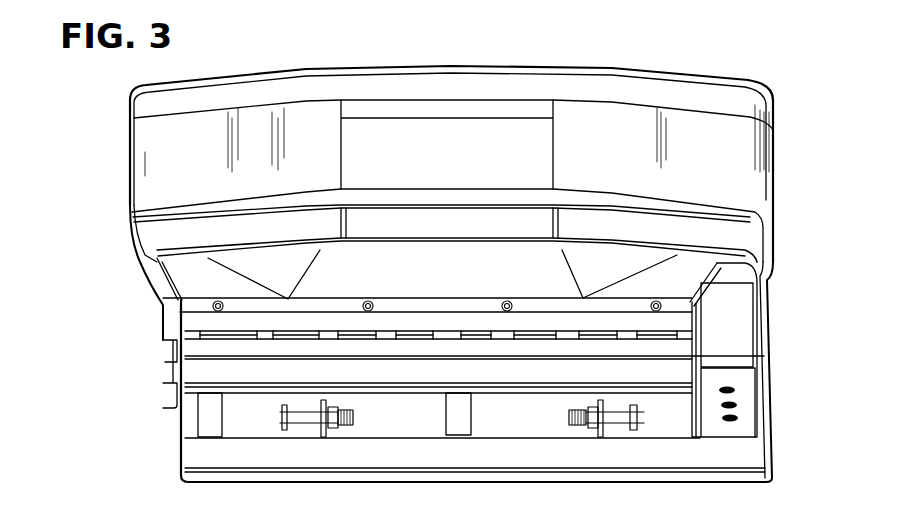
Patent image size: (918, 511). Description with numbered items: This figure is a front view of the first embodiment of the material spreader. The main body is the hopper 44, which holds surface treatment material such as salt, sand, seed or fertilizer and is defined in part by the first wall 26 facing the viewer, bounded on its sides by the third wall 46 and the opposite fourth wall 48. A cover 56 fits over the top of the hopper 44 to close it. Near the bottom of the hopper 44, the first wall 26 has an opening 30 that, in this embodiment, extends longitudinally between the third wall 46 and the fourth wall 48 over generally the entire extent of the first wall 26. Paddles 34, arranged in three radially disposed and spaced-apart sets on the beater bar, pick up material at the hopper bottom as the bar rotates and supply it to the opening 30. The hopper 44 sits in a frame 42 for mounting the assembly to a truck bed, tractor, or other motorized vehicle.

The first wall 26 is at (453, 133).
The opening 30 is at (238, 331).
The paddles 34 is at (563, 372).
The frame 42 is at (177, 430).
The hopper 44 is at (313, 128).
The third wall 46 is at (776, 146).
The fourth wall 48 is at (130, 201).
The cover 56 is at (727, 81).